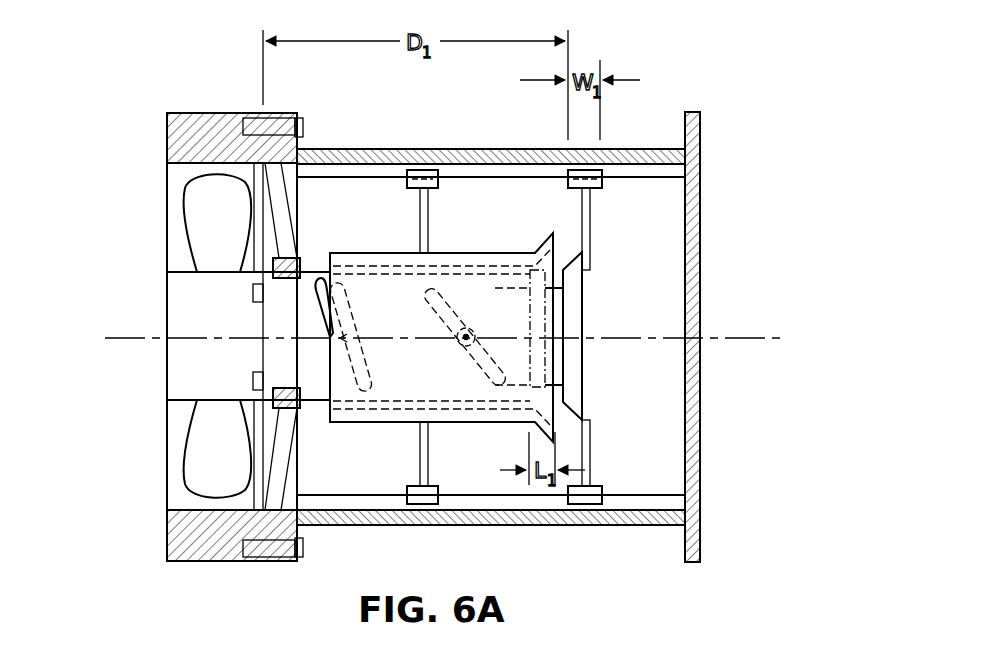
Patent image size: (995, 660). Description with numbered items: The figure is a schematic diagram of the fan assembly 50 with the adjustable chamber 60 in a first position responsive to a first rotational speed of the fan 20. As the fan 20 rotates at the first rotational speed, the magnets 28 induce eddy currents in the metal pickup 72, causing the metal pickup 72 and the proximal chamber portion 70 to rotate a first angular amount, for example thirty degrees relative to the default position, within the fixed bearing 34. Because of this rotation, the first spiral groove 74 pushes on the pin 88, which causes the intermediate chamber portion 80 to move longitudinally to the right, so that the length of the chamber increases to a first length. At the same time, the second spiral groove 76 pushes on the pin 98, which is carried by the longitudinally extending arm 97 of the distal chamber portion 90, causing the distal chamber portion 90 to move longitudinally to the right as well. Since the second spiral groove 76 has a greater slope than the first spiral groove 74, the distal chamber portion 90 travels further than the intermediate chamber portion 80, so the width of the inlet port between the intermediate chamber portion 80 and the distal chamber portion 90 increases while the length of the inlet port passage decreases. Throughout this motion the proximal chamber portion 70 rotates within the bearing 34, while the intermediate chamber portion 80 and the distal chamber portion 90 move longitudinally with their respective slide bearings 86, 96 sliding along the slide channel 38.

The fan assembly 50 is at (90, 67).
The fan 20 is at (212, 112).
The magnets 28 is at (253, 292).
The metal pickup 72 is at (302, 329).
The proximal chamber portion 70 is at (305, 276).
The bearing 34 is at (298, 408).
The first spiral groove 74 is at (322, 278).
The adjustable chamber 60 is at (536, 214).
The slide channel 38 is at (680, 180).
The intermediate chamber portion 80 is at (448, 423).
The longitudinally extending arm 97 is at (523, 320).
The pin 88 is at (348, 338).
The second spiral groove 76 is at (450, 303).
The pin 98 is at (468, 335).
The slide bearings 86 is at (440, 180).
The slide bearings 96 is at (592, 190).
The distal chamber portion 90 is at (583, 292).